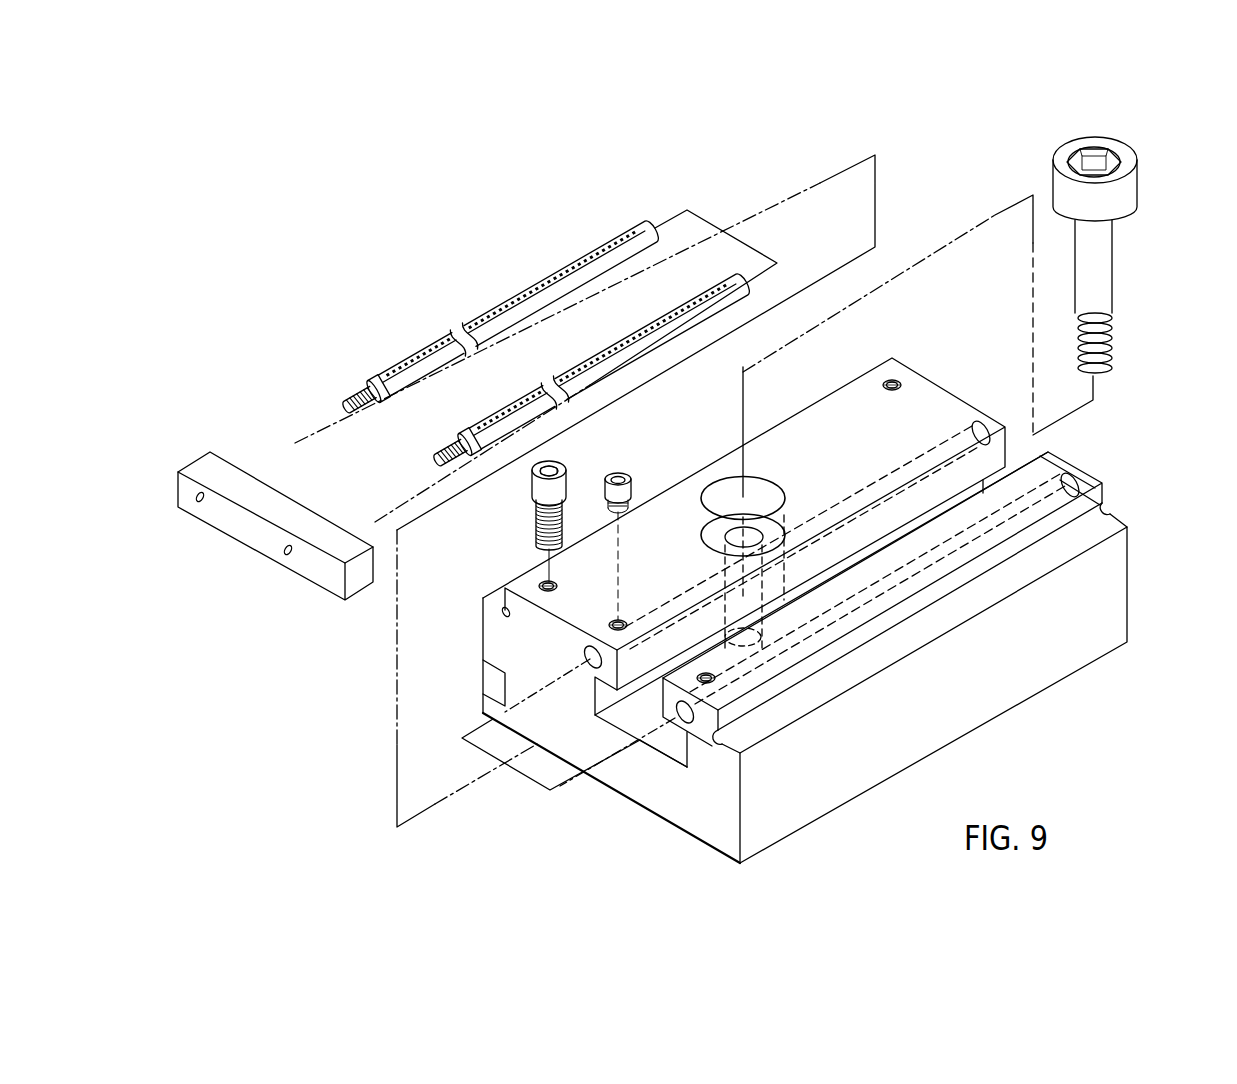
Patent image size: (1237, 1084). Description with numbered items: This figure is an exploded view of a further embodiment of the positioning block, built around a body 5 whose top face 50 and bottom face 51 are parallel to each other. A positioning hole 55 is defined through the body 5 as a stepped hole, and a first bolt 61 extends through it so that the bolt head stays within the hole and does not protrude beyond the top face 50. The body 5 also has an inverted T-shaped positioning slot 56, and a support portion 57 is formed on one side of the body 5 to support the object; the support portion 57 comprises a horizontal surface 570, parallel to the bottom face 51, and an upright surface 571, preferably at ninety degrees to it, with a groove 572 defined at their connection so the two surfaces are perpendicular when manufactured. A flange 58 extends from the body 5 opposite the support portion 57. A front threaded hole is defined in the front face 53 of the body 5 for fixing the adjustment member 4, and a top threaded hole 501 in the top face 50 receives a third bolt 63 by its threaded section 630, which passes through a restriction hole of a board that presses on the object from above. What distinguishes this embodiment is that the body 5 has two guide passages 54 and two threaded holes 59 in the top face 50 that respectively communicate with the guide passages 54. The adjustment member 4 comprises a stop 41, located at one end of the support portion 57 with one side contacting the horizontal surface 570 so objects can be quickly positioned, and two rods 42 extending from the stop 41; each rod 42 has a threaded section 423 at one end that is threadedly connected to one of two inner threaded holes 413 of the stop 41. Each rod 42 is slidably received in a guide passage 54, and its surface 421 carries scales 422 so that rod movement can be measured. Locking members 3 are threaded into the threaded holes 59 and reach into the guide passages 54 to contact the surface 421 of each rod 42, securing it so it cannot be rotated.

The locking member 3 is at (620, 474).
The adjustment member 4 is at (296, 328).
The stop 41 is at (240, 480).
The inner threaded hole 413 is at (288, 550).
The rod 42 is at (370, 386).
The surface 421 is at (548, 281).
The scales 422 is at (583, 266).
The threaded section 423 is at (450, 452).
The body 5 is at (976, 400).
The top face 50 is at (937, 401).
The top threaded hole 501 is at (545, 582).
The bottom face 51 is at (1072, 668).
The front face 53 is at (703, 817).
The guide passage 54 is at (587, 658).
The positioning hole 55 is at (755, 490).
The positioning slot 56 is at (660, 745).
The support portion 57 is at (1128, 414).
The horizontal surface 570 is at (1107, 519).
The upright surface 571 is at (1095, 497).
The groove 572 is at (1100, 510).
The flange 58 is at (497, 687).
The threaded hole 59 is at (705, 674).
The first bolt 61 is at (1107, 257).
The third bolt 63 is at (562, 465).
The threaded section 630 is at (538, 529).